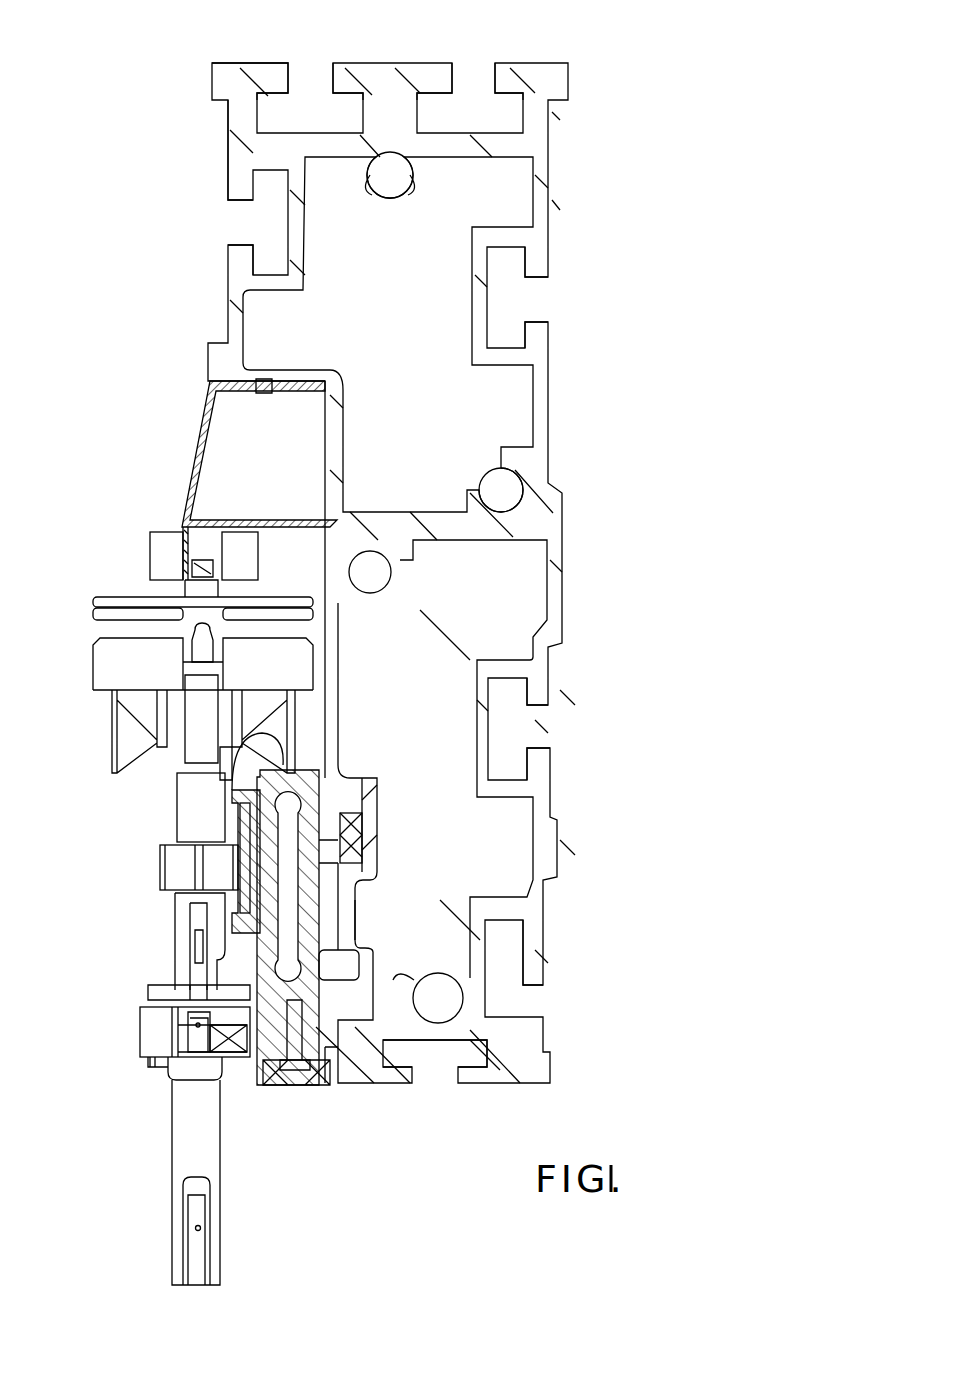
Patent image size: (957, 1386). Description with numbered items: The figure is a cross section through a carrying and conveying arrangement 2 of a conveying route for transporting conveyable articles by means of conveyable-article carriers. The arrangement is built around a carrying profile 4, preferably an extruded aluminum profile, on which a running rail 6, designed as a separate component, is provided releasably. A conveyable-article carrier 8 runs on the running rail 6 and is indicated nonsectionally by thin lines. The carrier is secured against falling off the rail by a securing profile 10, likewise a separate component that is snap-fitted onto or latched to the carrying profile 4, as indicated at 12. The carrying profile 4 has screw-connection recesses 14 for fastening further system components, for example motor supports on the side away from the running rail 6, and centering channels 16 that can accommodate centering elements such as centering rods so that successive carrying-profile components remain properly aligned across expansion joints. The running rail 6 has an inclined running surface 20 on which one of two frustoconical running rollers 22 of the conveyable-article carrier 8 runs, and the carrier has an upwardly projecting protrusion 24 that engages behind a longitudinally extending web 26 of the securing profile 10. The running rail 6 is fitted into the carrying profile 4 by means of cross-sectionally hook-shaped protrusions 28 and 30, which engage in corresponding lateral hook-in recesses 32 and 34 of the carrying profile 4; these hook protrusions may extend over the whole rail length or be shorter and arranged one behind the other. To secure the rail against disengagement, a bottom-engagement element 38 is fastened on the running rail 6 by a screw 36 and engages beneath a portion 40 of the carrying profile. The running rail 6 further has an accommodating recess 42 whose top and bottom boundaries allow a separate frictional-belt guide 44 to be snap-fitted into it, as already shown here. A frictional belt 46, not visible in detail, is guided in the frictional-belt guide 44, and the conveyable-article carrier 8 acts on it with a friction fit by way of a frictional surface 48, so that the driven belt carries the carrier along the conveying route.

The carrying and conveying arrangement 2 is at (92, 105).
The carrying profile 4 is at (540, 345).
The running rail 6 is at (252, 996).
The conveyable-article carrier 8 is at (95, 668).
The securing profile 10 is at (196, 458).
The snap-fit latching 12 is at (268, 388).
The screw-connection recesses 14 is at (338, 95).
The centering channels 16 is at (388, 178).
The inclined running surface 20 is at (215, 775).
The frustoconical running rollers 22 is at (140, 717).
The upwardly projecting protrusion 24 is at (198, 574).
The longitudinally extending web 26 is at (182, 548).
The hook-shaped protrusion 28 is at (350, 810).
The hook-shaped protrusion 30 is at (373, 957).
The lateral hook-in recess 32 is at (341, 808).
The lateral hook-in recess 34 is at (350, 933).
The screw 36 is at (287, 1075).
The bottom-engagement element 38 is at (308, 1070).
The portion of the carrying profile 40 is at (330, 1052).
The accommodating recess 42 is at (160, 853).
The frictional-belt guide 44 is at (250, 910).
The frictional belt 46 is at (236, 876).
The frictional surface 48 is at (252, 884).